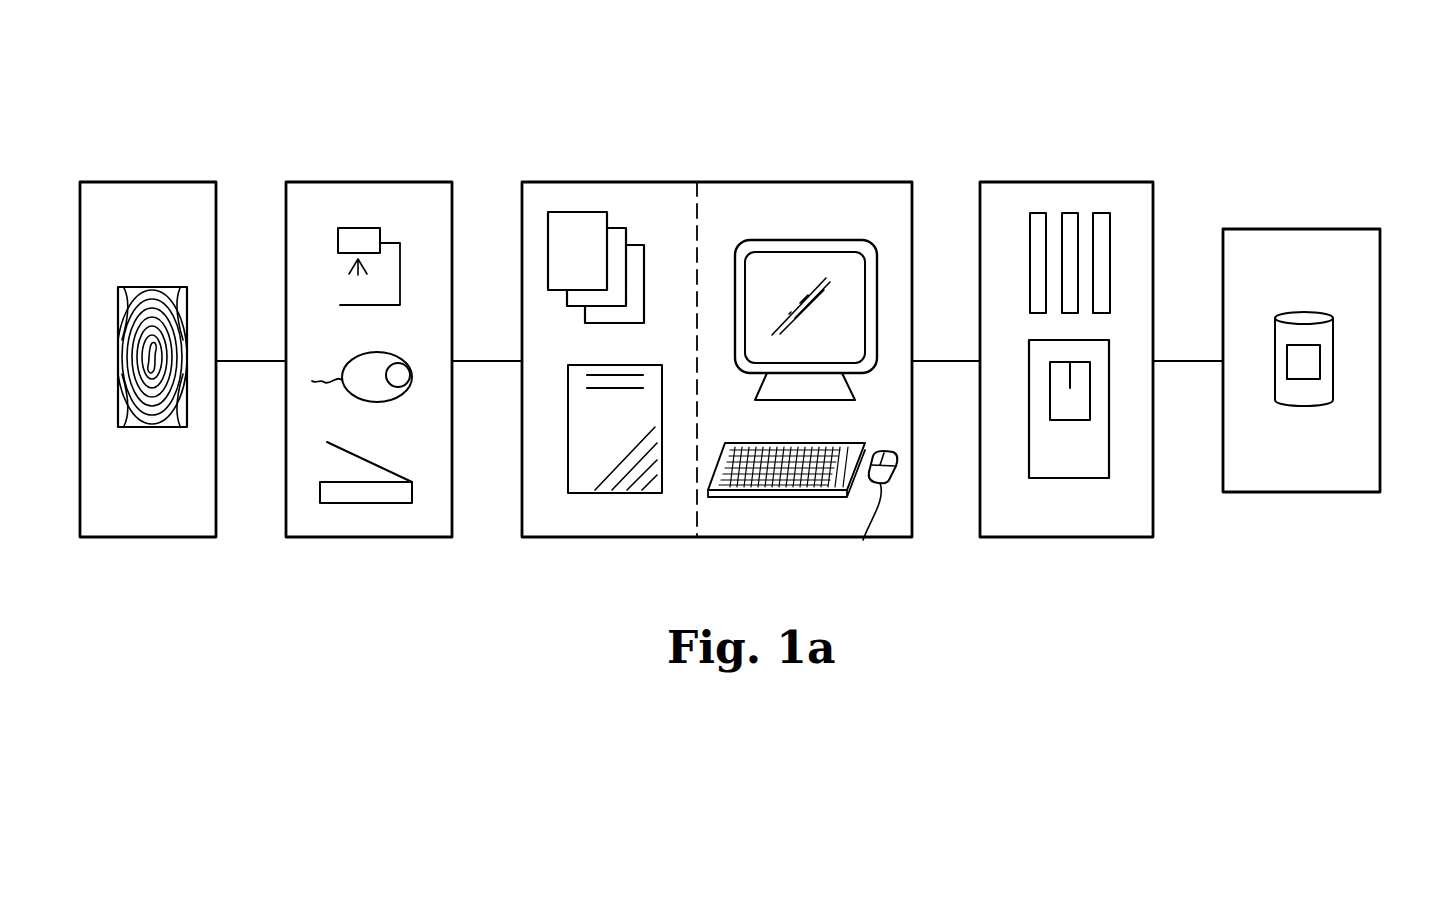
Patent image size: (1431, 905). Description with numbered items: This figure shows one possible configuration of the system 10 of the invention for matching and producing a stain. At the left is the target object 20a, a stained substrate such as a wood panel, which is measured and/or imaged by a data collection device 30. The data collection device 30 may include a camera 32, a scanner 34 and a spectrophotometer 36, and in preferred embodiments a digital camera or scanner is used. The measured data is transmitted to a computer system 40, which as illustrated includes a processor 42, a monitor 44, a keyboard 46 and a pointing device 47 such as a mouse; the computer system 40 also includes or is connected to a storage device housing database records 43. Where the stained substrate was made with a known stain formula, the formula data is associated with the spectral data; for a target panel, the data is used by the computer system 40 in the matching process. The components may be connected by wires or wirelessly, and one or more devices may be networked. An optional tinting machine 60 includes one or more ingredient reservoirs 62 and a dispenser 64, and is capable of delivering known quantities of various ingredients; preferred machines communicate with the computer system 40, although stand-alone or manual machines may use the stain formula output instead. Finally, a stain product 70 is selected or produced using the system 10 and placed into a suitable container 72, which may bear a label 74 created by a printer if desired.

The system 10 is at (932, 76).
The target object 20a is at (151, 178).
The data collection device 30 is at (367, 178).
The camera 32 is at (400, 272).
The scanner 34 is at (413, 492).
The spectrophotometer 36 is at (385, 352).
The computer system 40 is at (655, 178).
The processor 42 is at (592, 427).
The database records 43 is at (578, 220).
The monitor 44 is at (872, 282).
The keyboard 46 is at (788, 480).
The pointing device 47 is at (872, 514).
The tinting machine 60 is at (1162, 276).
The ingredient reservoir 62 is at (1105, 238).
The dispenser 64 is at (1072, 377).
The stain product 70 is at (1302, 222).
The container 72 is at (1302, 400).
The storage label 74 is at (1318, 362).